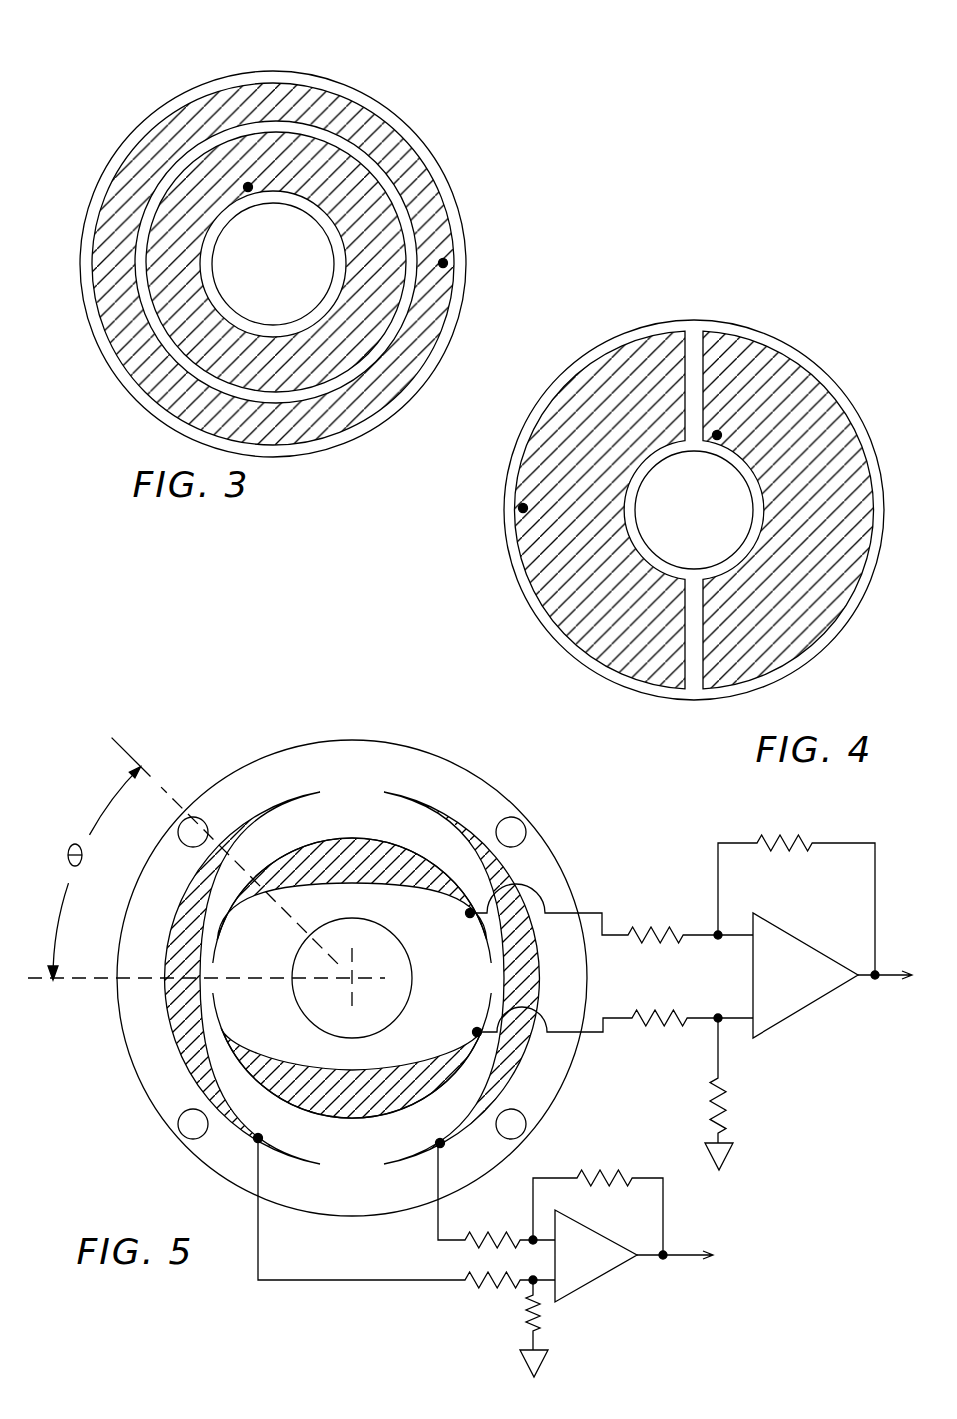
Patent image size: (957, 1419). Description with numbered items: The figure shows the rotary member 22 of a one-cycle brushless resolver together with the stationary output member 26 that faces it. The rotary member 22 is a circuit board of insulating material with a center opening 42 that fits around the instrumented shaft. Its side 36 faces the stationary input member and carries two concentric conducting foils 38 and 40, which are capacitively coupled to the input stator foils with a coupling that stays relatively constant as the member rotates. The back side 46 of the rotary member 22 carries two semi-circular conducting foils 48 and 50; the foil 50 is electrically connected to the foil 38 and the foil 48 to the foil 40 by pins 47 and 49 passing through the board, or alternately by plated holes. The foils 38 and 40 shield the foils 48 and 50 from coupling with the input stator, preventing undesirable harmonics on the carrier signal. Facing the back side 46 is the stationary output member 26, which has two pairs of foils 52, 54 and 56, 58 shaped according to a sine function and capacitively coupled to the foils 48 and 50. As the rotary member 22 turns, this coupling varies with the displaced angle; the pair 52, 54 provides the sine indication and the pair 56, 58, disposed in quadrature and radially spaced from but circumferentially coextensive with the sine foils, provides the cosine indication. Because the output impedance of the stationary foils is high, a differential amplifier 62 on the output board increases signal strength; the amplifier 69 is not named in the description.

In FIG. 3, the rotary member 22 is at (271, 237).
In FIG. 5, the stationary output member 26 is at (583, 1106).
In FIG. 3, the side 36 is at (313, 73).
In FIG. 3, the conducting foil 38 is at (180, 188).
In FIG. 3, the conducting foil 40 is at (115, 227).
In FIG. 3, the center opening 42 is at (315, 237).
In FIG. 4, the back side 46 is at (853, 607).
In FIG. 3, the pin 47 is at (248, 187).
In FIG. 4, the pin 47 is at (717, 435).
In FIG. 4, the semi-circular conducting foil 48 is at (551, 570).
In FIG. 3, the pin 49 is at (443, 263).
In FIG. 4, the pin 49 is at (523, 508).
In FIG. 4, the semi-circular conducting foil 50 is at (853, 553).
In FIG. 5, the output foil 52 is at (413, 857).
In FIG. 5, the output foil 54 is at (418, 1070).
In FIG. 5, the output foil 56 is at (512, 1053).
In FIG. 5, the output foil 58 is at (187, 1020).
In FIG. 5, the differential amplifier 62 is at (797, 1013).
In FIG. 5, the operational amplifier 69 is at (622, 1265).